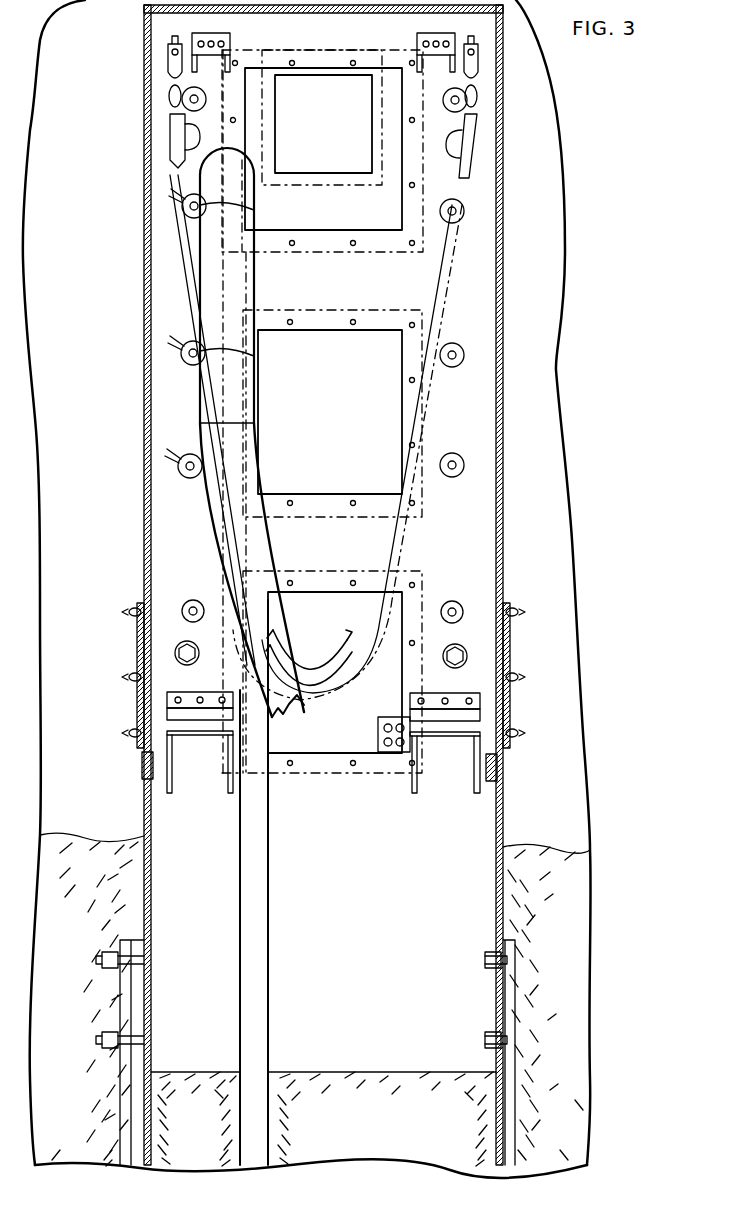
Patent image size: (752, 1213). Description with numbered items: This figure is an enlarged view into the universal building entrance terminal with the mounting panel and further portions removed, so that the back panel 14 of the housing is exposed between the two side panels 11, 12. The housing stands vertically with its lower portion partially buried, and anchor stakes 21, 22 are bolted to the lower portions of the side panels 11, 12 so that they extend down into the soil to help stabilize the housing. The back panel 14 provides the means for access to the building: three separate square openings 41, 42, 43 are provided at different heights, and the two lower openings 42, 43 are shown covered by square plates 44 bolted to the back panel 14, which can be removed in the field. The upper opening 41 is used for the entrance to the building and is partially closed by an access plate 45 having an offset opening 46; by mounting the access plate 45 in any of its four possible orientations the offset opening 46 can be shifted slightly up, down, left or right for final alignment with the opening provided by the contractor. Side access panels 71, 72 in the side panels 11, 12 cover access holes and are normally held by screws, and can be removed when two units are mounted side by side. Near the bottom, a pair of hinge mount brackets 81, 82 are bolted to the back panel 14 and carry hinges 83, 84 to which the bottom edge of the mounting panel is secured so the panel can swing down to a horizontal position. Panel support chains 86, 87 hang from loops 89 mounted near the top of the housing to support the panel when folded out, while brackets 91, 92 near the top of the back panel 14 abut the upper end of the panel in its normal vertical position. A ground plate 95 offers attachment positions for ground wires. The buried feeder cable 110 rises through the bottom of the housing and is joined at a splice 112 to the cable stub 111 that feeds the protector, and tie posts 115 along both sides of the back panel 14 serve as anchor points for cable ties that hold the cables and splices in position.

The side panel 11 is at (150, 315).
The side panel 12 is at (500, 296).
The back panel 14 is at (372, 899).
The anchor stake 21 is at (120, 995).
The anchor stake 22 is at (515, 1062).
The square opening 41 is at (340, 230).
The square opening 42 is at (314, 494).
The square opening 43 is at (318, 753).
The square plate 44 is at (332, 427).
The access plate 45 is at (385, 216).
The offset opening 46 is at (318, 173).
The side access panel 71 is at (137, 632).
The side access panel 72 is at (510, 644).
The hinge mount bracket 81 is at (172, 783).
The hinge mount bracket 82 is at (474, 780).
The hinge 83 is at (178, 692).
The hinge 84 is at (480, 710).
The panel support chain 86 is at (470, 150).
The panel support chain 87 is at (170, 136).
The loop 89 is at (168, 52).
The bracket 91 is at (230, 36).
The bracket 92 is at (417, 40).
The ground plate 95 is at (378, 722).
The feeder cable 110 is at (270, 968).
The cable stub 111 is at (272, 552).
The splice 112 is at (200, 262).
The tie post 115 is at (182, 210).